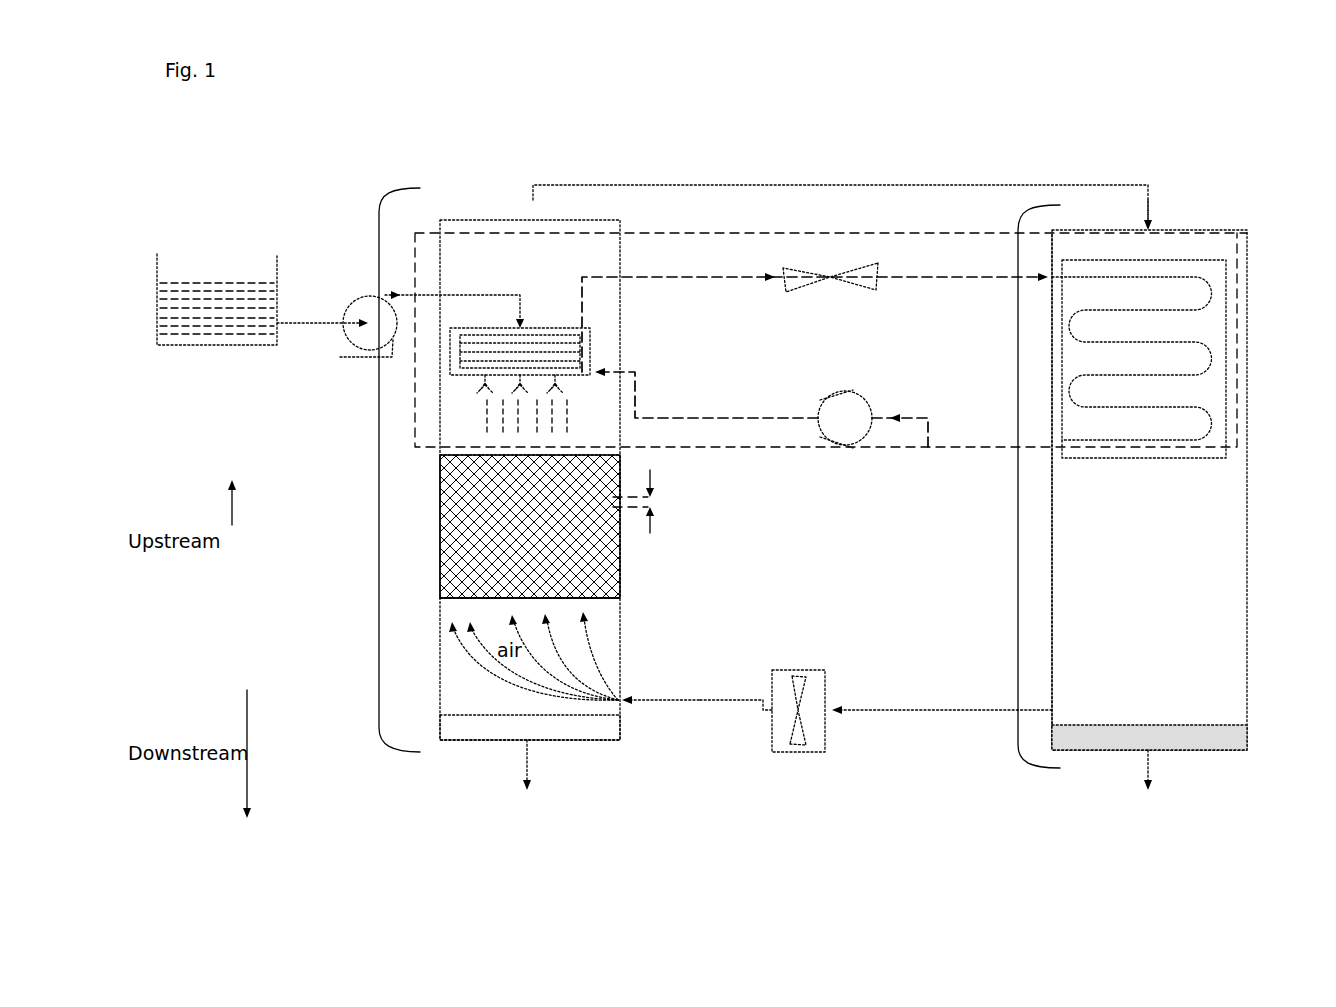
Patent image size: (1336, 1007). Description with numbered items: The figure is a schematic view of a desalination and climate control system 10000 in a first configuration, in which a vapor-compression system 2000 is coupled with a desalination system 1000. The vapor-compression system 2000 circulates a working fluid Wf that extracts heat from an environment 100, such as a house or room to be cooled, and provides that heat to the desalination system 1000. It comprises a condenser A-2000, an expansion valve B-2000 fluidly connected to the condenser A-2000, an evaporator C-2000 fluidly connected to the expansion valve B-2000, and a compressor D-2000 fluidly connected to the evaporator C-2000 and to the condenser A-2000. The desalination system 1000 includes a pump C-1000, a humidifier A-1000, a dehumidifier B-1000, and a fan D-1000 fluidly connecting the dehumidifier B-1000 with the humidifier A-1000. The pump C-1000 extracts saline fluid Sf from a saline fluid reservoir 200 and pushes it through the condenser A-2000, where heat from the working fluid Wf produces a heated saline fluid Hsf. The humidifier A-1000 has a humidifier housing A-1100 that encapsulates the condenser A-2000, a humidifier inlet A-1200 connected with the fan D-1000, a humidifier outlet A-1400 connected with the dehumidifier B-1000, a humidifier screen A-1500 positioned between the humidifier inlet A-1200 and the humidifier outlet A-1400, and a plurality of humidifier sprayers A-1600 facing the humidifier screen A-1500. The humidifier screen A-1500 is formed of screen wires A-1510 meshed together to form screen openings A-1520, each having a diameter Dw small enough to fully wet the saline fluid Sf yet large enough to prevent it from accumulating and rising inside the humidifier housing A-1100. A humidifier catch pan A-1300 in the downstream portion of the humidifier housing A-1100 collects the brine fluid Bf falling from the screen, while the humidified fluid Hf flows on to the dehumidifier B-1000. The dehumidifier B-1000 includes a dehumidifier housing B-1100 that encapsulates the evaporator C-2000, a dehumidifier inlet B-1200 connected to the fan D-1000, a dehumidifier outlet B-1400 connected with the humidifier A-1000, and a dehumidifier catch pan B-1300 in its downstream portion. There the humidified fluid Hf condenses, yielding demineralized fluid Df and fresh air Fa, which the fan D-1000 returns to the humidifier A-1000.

The desalination system 1000 is at (940, 795).
The desalination and climate control system 10000 is at (850, 126).
The vapor-compression system 2000 is at (415, 233).
The saline fluid reservoir 200 is at (217, 346).
The environment 100 is at (1122, 260).
The saline fluid Sf is at (193, 282).
The pump C-1000 is at (352, 345).
The humidifier A-1000 is at (386, 588).
The humidifier housing A-1100 is at (440, 677).
The humidifier inlet A-1200 is at (622, 690).
The humidifier catch pan A-1300 is at (460, 740).
The humidifier outlet A-1400 is at (530, 220).
The humidifier screen A-1500 is at (415, 591).
The screen wires A-1510 is at (607, 532).
The screen openings A-1520 is at (607, 568).
The humidifier sprayers A-1600 is at (520, 380).
The condenser A-2000 is at (557, 328).
The working fluid Wf is at (690, 278).
The humidified fluid Hf is at (780, 185).
The heated saline fluid Hsf is at (567, 403).
The dehumidifier B-1000 is at (1018, 594).
The dehumidifier housing B-1100 is at (1052, 512).
The dehumidifier inlet B-1200 is at (1150, 185).
The dehumidifier catch pan B-1300 is at (1180, 726).
The dehumidifier outlet B-1400 is at (1050, 710).
The expansion valve B-2000 is at (830, 265).
The evaporator C-2000 is at (1075, 335).
The fan D-1000 is at (770, 740).
The compressor D-2000 is at (823, 442).
The diameter Dw is at (649, 496).
The fresh air Fa is at (712, 700).
The brine fluid Bf is at (530, 765).
The demineralized fluid Df is at (1152, 767).